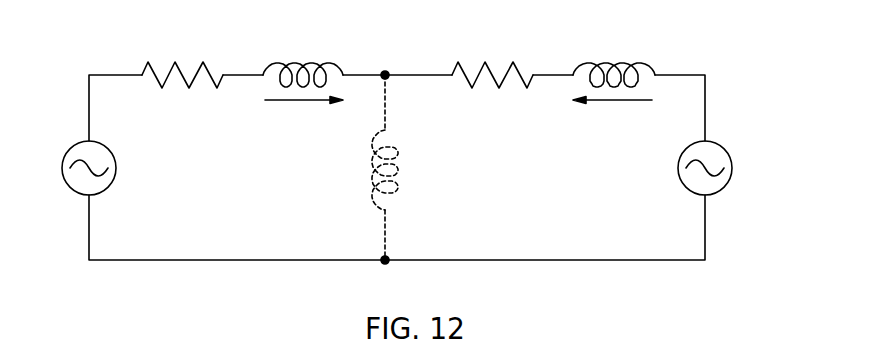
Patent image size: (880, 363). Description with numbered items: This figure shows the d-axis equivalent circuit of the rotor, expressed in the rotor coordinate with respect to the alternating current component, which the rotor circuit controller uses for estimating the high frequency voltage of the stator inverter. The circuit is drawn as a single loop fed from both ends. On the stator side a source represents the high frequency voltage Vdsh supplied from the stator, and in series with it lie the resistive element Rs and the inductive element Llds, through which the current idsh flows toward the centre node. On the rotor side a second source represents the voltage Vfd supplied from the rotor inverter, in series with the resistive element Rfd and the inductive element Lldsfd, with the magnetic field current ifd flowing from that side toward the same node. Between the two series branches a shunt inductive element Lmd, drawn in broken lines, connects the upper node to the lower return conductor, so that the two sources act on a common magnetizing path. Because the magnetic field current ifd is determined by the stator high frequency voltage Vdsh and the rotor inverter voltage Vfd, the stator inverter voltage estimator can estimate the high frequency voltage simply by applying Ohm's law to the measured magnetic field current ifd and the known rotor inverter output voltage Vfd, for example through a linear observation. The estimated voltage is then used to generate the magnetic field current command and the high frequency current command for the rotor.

The stator resistance Rs is at (182, 57).
The stator d-axis leakage inductance Llds is at (303, 58).
The field winding resistance Rfd is at (492, 57).
The field winding leakage inductance Lldsfd is at (614, 58).
The d-axis magnetizing inductance Lmd is at (358, 167).
The high frequency voltage supplied from the stator Vdsh is at (112, 168).
The voltage supplied from the rotor inverter Vfd is at (724, 168).
The stator d-axis current idsh is at (304, 119).
The magnetic field current ifd is at (612, 119).